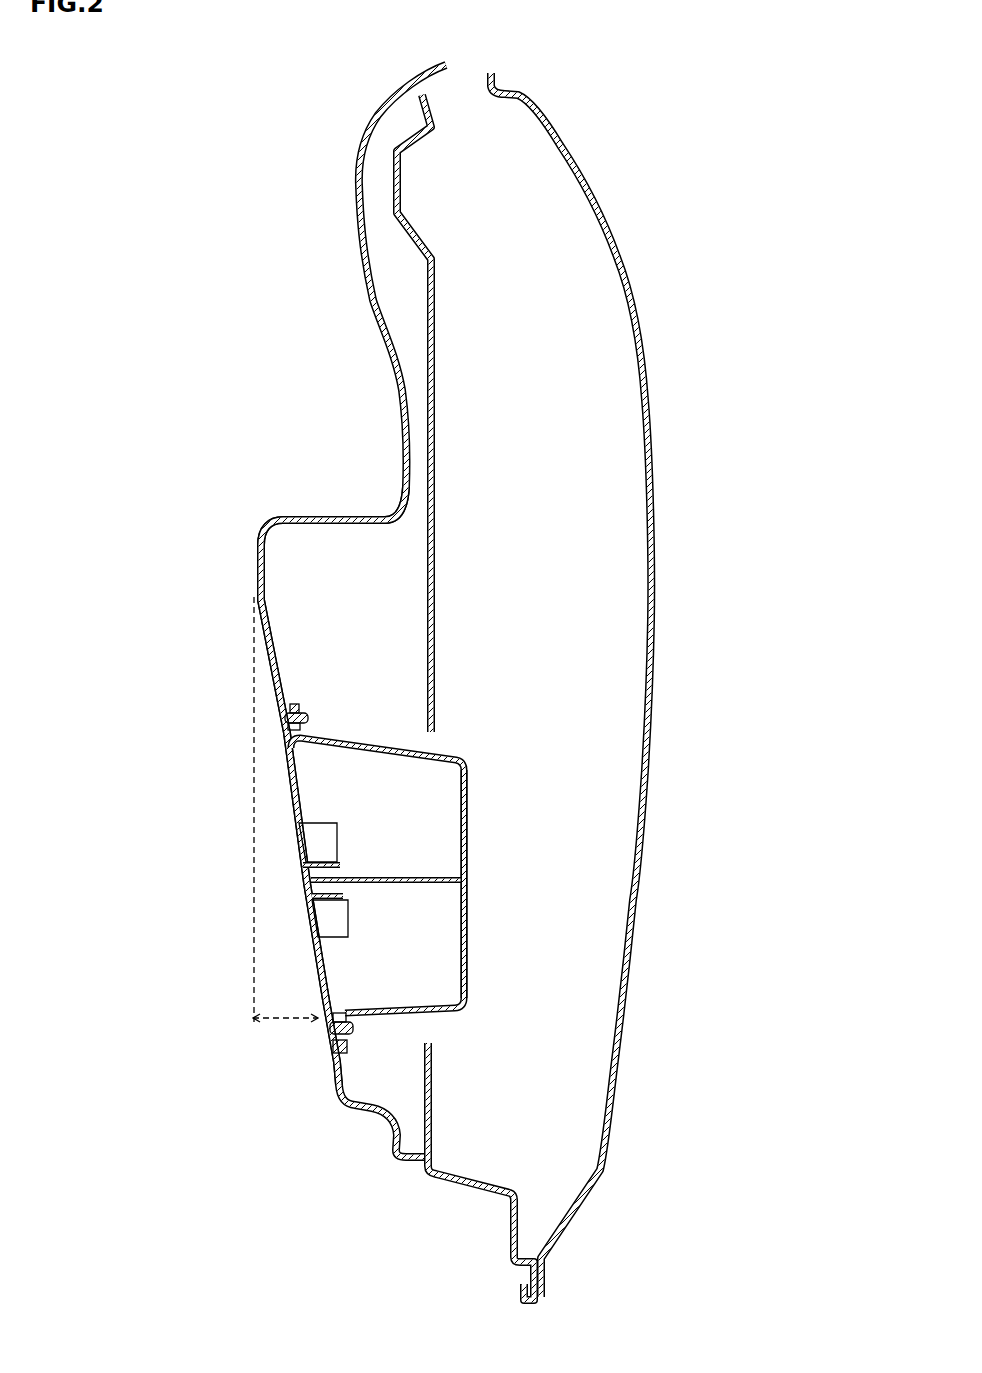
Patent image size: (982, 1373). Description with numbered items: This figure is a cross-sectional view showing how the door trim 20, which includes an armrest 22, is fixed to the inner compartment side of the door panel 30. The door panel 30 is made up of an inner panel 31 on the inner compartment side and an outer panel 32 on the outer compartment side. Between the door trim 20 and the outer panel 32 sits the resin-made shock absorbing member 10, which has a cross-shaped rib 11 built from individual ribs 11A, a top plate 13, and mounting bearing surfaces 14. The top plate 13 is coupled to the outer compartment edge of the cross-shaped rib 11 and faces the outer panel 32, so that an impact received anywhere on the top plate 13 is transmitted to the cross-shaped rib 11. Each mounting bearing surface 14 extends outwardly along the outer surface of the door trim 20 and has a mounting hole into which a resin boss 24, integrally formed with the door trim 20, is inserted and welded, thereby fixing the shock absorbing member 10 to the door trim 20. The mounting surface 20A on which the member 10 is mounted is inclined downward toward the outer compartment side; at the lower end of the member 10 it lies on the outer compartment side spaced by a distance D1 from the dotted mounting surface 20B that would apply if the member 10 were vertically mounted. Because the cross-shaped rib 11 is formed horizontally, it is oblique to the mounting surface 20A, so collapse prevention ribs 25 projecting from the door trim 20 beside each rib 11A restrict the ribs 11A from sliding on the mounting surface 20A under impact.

The resin-made shock absorbing member 10 is at (367, 891).
The cross-shaped rib 11 is at (431, 883).
The rib 11A is at (323, 787).
The top plate 13 is at (468, 938).
The mounting bearing surface 14 is at (296, 704).
The door trim 20 is at (330, 150).
The mounting surface 20A is at (290, 798).
The mounting surface 20B is at (252, 872).
The armrest 22 is at (336, 516).
The resin boss 24 is at (306, 719).
The collapse prevention rib 25 is at (322, 840).
The door panel 30 is at (547, 686).
The inner panel 31 is at (432, 280).
The outer panel 32 is at (622, 242).
The distance D1 is at (287, 1032).